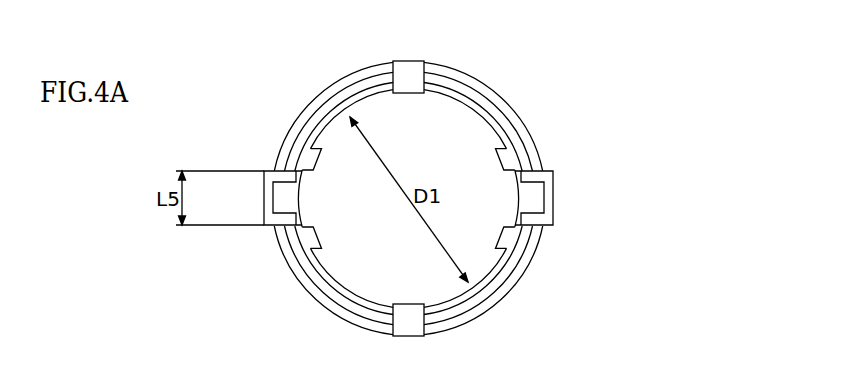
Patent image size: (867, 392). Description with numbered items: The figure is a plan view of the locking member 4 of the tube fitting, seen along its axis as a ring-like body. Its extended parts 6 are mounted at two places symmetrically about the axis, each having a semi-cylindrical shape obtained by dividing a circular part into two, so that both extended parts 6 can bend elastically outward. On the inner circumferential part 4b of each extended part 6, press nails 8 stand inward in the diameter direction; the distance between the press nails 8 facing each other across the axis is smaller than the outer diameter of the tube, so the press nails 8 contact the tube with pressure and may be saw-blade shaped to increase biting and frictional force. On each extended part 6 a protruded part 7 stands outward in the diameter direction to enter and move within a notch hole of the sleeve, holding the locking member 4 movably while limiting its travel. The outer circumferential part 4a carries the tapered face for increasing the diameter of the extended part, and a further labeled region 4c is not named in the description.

The locking member 4 is at (443, 176).
The outer circumferential part 4a is at (435, 170).
The inner circumferential part 4b is at (475, 121).
The central hole 4c is at (373, 228).
The extended part 6 is at (558, 160).
The protruded part 7 is at (266, 170).
The press nail 8 is at (490, 130).